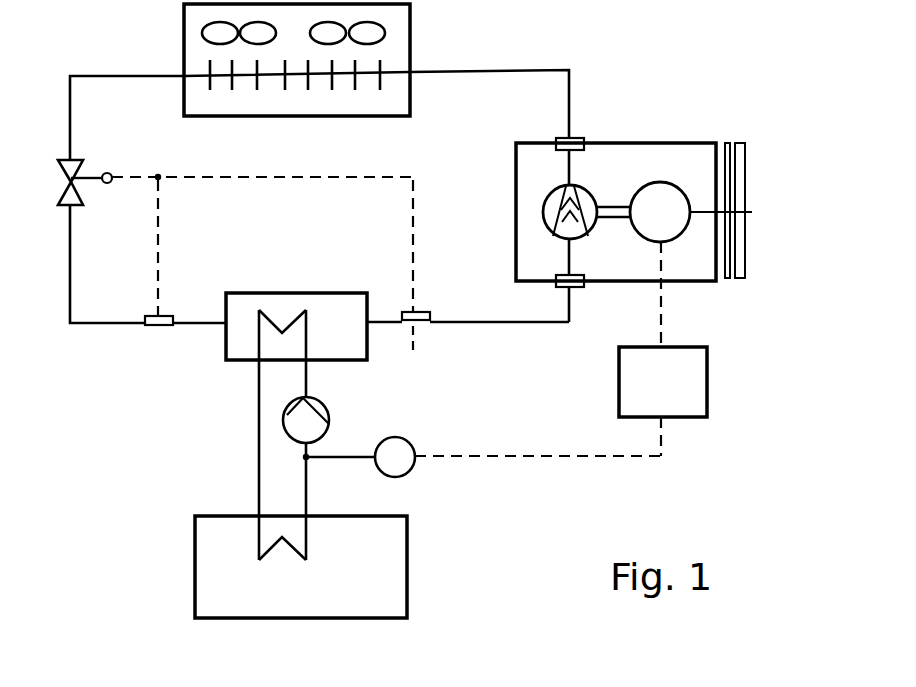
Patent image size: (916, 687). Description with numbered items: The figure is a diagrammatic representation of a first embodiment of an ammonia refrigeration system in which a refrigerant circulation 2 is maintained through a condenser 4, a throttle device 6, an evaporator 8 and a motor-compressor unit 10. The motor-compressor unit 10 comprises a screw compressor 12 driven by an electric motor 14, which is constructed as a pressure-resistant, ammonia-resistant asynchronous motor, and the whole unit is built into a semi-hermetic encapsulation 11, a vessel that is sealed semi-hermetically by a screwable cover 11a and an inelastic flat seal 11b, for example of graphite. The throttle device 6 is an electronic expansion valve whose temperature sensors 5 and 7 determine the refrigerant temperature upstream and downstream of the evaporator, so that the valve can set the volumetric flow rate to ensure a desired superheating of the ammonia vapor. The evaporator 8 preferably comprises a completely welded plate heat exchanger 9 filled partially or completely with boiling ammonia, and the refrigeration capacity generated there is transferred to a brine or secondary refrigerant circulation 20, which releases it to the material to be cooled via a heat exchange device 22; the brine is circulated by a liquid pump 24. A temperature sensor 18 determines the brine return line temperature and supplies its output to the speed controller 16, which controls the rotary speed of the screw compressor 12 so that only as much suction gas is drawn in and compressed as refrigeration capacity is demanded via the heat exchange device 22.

The refrigerant circulation 2 is at (118, 340).
The condenser 4 is at (412, 33).
The temperature sensor 5 is at (163, 327).
The throttle device 6 is at (62, 184).
The temperature sensor 7 is at (416, 285).
The evaporator 8 is at (235, 375).
The plate heat exchanger 9 is at (345, 340).
The motor-compressor unit 10 is at (627, 128).
The semi-hermetic encapsulation 11 is at (683, 143).
The screwable cover 11a is at (746, 180).
The inelastic flat seal 11b is at (732, 165).
The screw compressor 12 is at (543, 210).
The electric motor 14 is at (690, 212).
The speed controller 16 is at (680, 394).
The temperature sensor 18 is at (412, 445).
The secondary refrigerant circulation 20 is at (236, 442).
The heat exchange device 22 is at (380, 588).
The liquid pump 24 is at (329, 432).